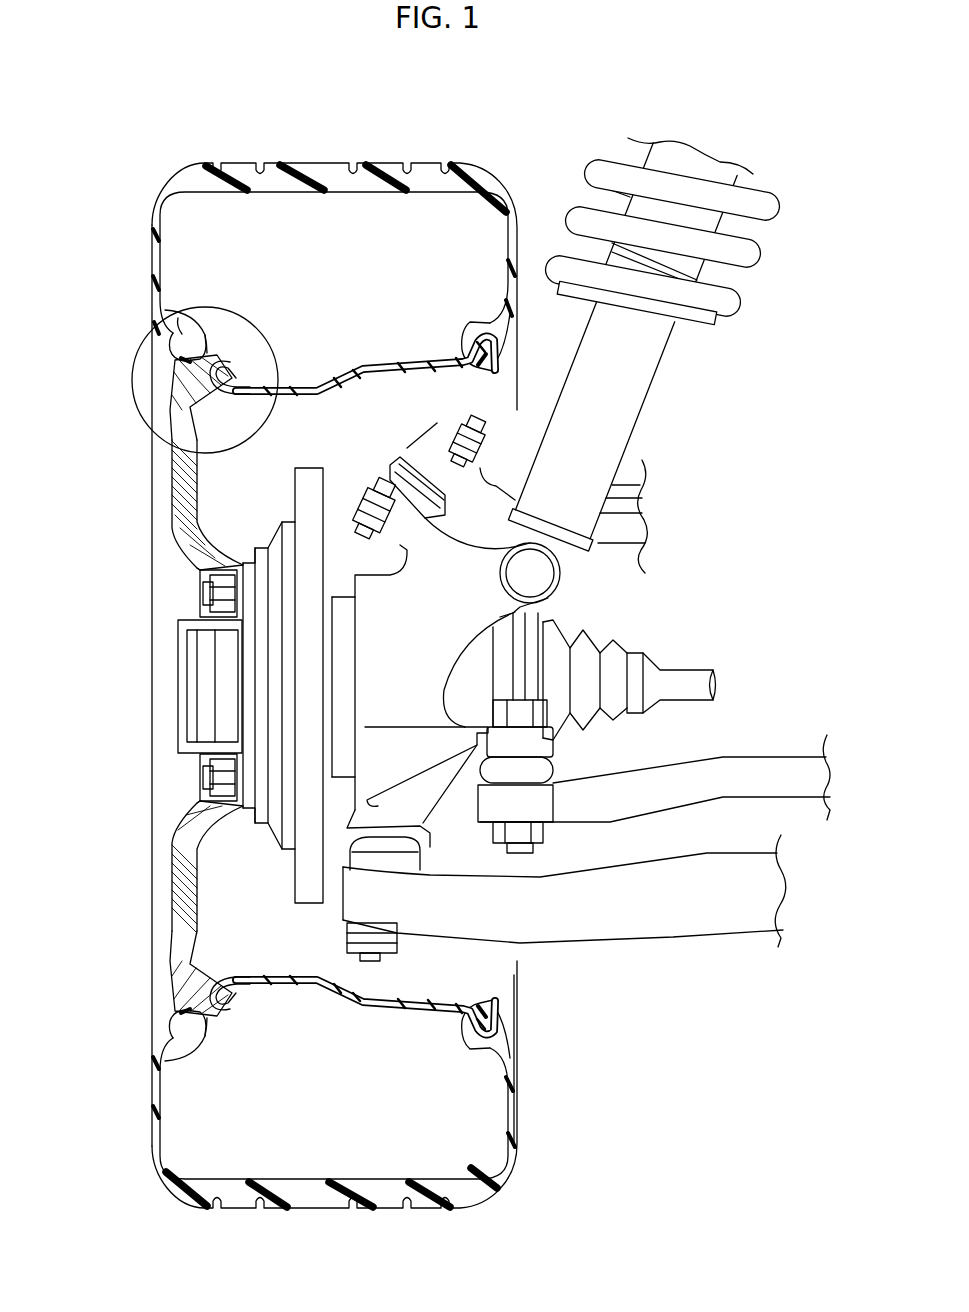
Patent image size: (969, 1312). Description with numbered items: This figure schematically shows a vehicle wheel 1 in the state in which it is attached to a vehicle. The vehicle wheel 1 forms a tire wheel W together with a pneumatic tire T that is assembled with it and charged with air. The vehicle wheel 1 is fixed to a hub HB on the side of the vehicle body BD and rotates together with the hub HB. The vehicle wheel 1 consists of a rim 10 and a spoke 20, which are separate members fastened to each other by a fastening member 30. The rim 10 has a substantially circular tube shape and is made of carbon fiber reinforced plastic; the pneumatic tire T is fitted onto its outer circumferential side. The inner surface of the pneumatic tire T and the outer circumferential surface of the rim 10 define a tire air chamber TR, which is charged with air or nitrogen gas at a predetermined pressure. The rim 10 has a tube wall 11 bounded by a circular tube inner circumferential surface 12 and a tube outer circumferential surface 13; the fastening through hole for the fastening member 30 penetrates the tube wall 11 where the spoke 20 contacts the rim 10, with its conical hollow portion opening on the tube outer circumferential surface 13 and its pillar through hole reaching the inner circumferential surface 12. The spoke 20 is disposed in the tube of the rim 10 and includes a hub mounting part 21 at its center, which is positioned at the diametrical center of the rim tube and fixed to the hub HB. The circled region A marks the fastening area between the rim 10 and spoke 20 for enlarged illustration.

The tire wheel W is at (178, 181).
The pneumatic tire T is at (328, 162).
The tire air chamber TR is at (343, 281).
The vehicle body BD is at (585, 165).
The hub HB is at (278, 522).
The vehicle wheel 1 is at (169, 334).
The rim 10 is at (368, 367).
The tube wall 11 is at (323, 394).
The circular tube inner circumferential surface 12 is at (384, 380).
The tube outer circumferential surface 13 is at (416, 360).
The spoke 20 is at (170, 493).
The hub mounting part 21 is at (198, 595).
The fastening member 30 is at (170, 378).
The enlarged region A is at (136, 420).